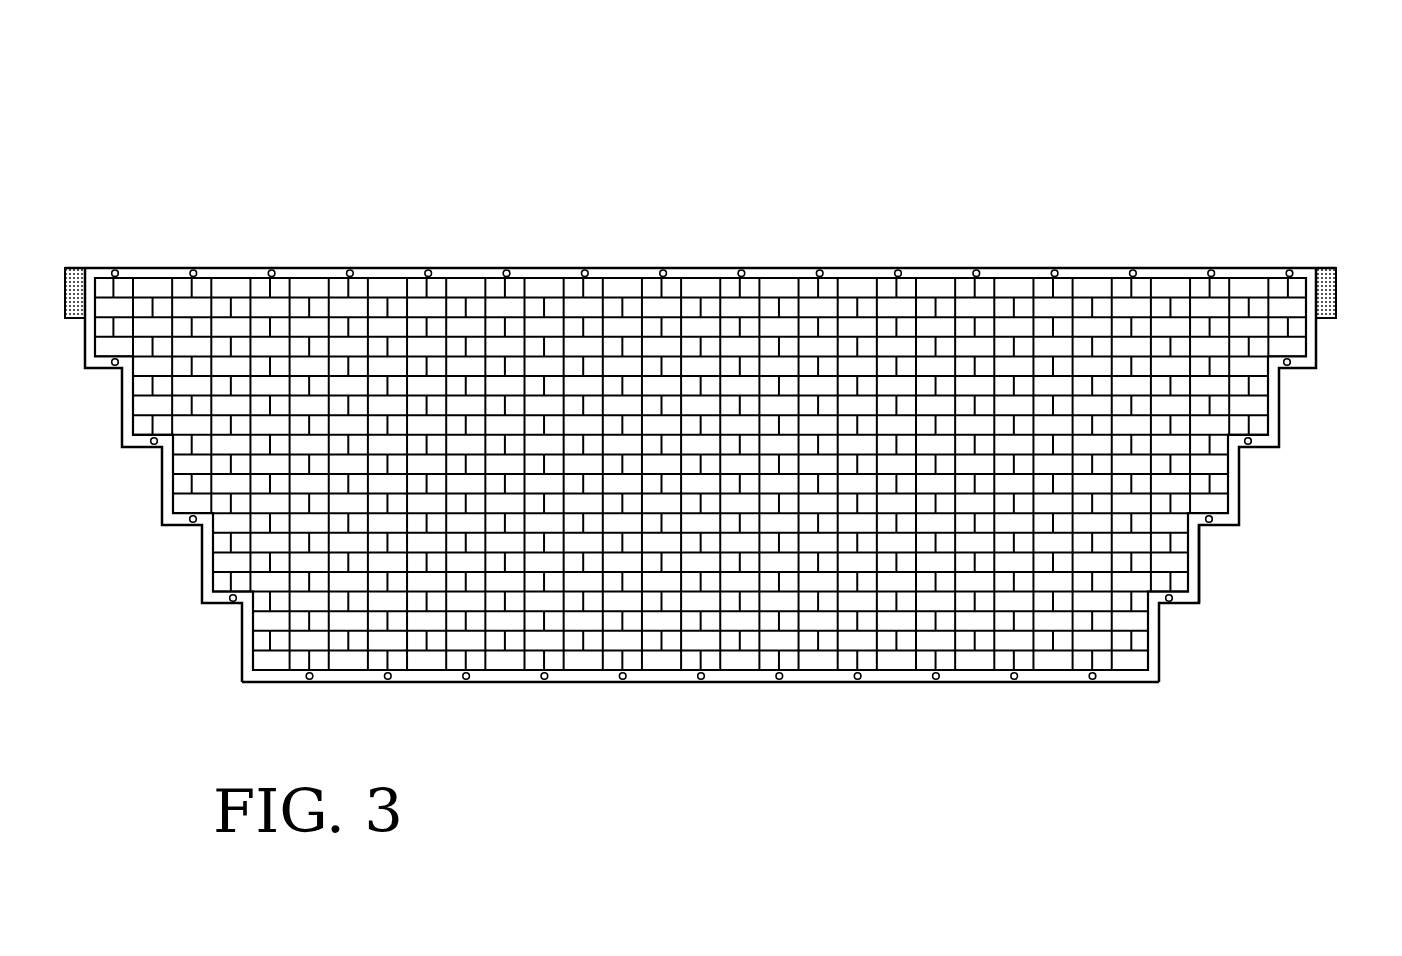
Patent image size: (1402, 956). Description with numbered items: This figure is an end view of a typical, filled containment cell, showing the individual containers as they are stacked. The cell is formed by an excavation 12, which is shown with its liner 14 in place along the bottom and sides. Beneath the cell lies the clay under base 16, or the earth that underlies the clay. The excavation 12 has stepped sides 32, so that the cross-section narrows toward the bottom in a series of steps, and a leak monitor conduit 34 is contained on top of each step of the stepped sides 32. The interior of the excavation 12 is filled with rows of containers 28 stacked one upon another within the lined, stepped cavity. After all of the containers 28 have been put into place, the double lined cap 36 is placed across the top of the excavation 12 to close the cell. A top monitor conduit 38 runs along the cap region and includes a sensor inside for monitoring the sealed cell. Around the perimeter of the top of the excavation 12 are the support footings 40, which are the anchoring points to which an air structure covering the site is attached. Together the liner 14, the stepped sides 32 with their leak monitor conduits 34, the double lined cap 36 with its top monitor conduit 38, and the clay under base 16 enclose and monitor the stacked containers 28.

The excavation 12 is at (723, 423).
The liner 14 is at (1279, 422).
The clay under base 16 is at (727, 765).
The containers 28 is at (1023, 290).
The stepped sides 32 is at (1212, 565).
The leak monitor conduit 34 is at (1172, 602).
The double lined cap 36 is at (558, 273).
The top monitor conduit 38 is at (427, 270).
The support footings 40 is at (1325, 268).